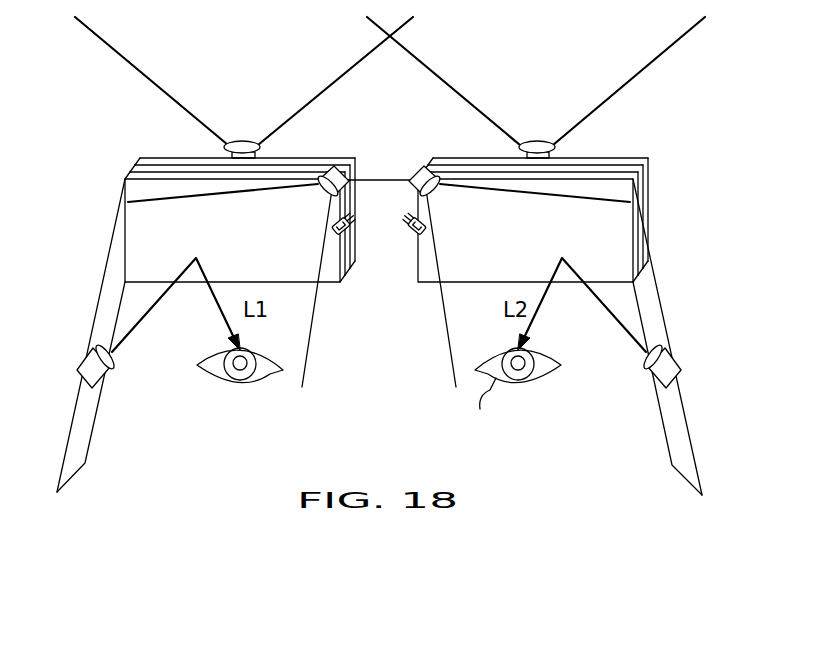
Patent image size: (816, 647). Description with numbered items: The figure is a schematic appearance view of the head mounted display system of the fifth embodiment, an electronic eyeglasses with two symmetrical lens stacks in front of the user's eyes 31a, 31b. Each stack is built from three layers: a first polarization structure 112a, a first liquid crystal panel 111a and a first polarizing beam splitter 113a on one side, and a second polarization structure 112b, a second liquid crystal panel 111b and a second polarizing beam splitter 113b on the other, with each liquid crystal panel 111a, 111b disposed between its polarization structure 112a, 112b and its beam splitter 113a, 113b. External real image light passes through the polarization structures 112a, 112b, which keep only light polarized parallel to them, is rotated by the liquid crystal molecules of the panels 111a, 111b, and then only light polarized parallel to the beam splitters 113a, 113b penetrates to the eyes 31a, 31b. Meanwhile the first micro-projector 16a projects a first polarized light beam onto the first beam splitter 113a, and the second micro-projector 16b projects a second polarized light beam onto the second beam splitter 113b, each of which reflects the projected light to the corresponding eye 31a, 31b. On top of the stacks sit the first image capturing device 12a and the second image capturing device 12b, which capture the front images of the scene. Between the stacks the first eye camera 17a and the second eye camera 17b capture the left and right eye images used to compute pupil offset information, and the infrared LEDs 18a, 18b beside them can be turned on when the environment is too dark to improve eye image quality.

The first image capturing device 12a is at (243, 147).
The second image capturing device 12b is at (531, 146).
The first micro-projector 16a is at (78, 369).
The second micro-projector 16b is at (680, 369).
The first eye camera 17a is at (333, 170).
The second eye camera 17b is at (410, 170).
The infrared LED 18a is at (346, 226).
The infrared LED 18b is at (412, 226).
The user's eye 31a is at (262, 378).
The user's eye 31b is at (524, 390).
The first liquid crystal panel 111a is at (133, 170).
The second liquid crystal panel 111b is at (640, 180).
The first polarization structure 112a is at (157, 163).
The second polarization structure 112b is at (650, 168).
The first polarizing beam splitter 113a is at (126, 182).
The second polarizing beam splitter 113b is at (635, 187).